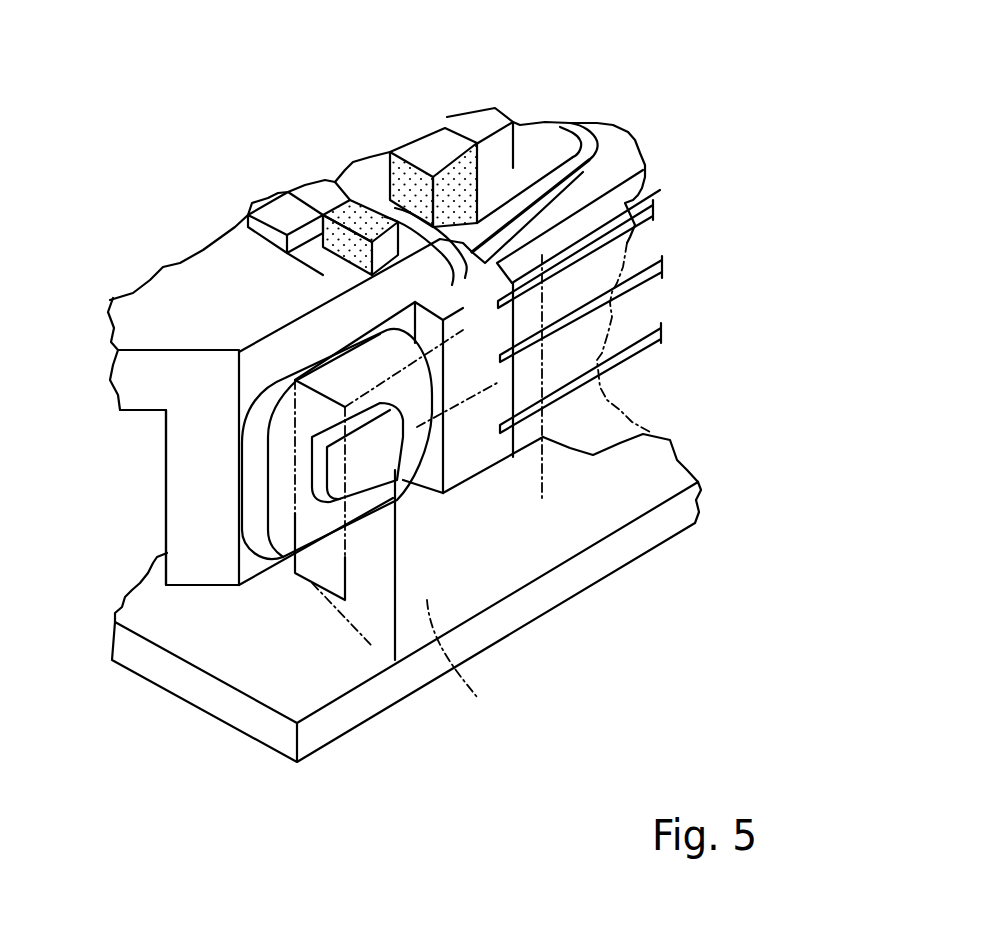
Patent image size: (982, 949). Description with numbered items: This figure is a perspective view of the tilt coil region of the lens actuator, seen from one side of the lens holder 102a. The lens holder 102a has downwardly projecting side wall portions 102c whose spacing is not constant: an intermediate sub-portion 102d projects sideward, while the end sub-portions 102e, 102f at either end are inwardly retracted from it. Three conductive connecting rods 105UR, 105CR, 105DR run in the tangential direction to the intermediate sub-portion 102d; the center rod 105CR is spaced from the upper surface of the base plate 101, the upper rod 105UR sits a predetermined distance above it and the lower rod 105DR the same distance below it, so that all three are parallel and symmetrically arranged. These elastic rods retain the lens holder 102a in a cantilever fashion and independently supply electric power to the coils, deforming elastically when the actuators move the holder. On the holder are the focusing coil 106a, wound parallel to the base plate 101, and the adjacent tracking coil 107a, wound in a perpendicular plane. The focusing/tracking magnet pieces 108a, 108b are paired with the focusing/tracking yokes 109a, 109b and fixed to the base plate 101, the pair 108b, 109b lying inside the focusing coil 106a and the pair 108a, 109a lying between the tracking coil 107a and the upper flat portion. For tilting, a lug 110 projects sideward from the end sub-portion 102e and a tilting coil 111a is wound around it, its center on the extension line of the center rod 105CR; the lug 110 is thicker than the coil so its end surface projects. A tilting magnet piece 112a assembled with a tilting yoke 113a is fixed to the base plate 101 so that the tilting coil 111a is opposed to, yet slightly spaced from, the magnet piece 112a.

The base plate 101 is at (232, 663).
The lens holder 102a is at (199, 548).
The side wall portions 102c is at (188, 475).
The intermediate sub-portions 102d is at (650, 433).
The end sub-portion 102e is at (255, 370).
The end sub-portion 102f is at (637, 200).
The conductive connecting rod 105UR is at (640, 226).
The conductive connecting rod 105CR is at (623, 292).
The conductive connecting rod 105DR is at (633, 357).
The focusing coil 106a is at (587, 148).
The tracking coil 107a is at (390, 235).
The focusing/tracking magnet piece 108a is at (328, 213).
The focusing/tracking magnet piece 108b is at (448, 158).
The focusing/tracking yoke 109a is at (268, 212).
The focusing/tracking yoke 109b is at (503, 163).
The lug 110 is at (377, 457).
The tilting coil 111a is at (403, 480).
The tilting magnet piece 112a is at (310, 570).
The tilting yoke 113a is at (477, 697).